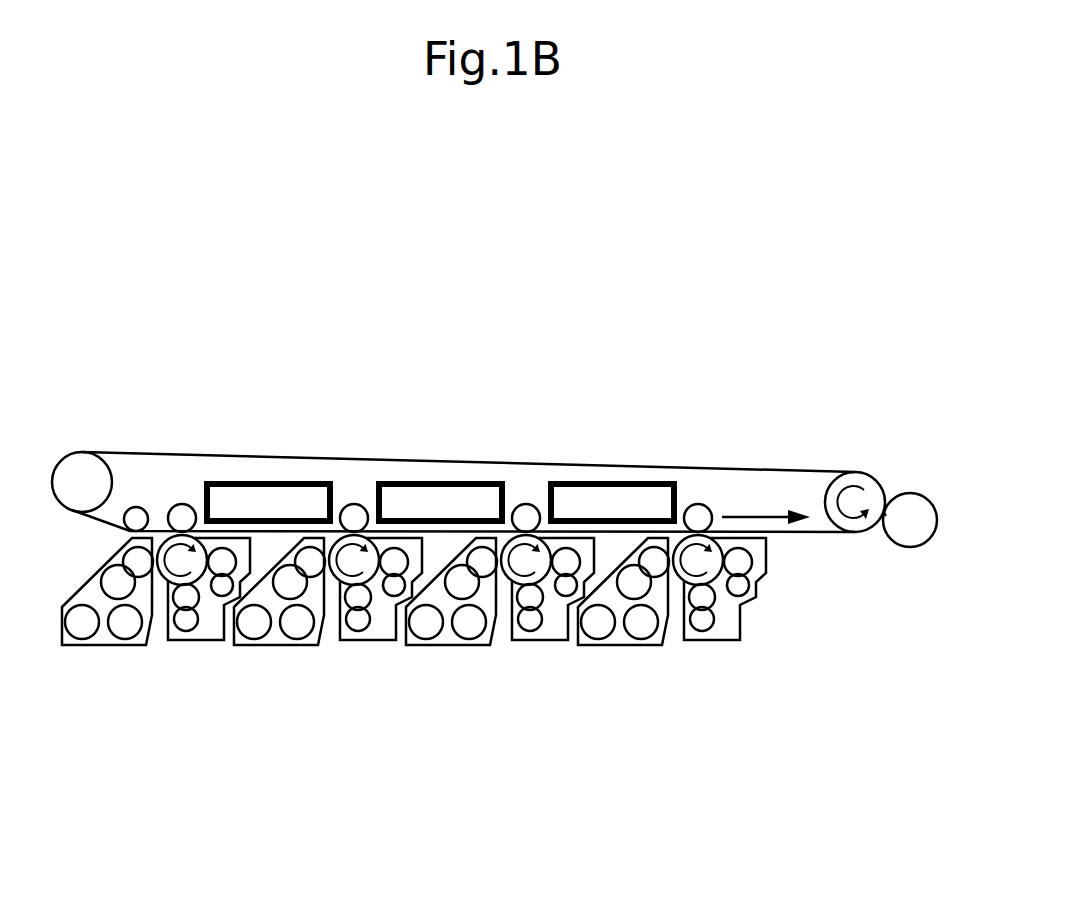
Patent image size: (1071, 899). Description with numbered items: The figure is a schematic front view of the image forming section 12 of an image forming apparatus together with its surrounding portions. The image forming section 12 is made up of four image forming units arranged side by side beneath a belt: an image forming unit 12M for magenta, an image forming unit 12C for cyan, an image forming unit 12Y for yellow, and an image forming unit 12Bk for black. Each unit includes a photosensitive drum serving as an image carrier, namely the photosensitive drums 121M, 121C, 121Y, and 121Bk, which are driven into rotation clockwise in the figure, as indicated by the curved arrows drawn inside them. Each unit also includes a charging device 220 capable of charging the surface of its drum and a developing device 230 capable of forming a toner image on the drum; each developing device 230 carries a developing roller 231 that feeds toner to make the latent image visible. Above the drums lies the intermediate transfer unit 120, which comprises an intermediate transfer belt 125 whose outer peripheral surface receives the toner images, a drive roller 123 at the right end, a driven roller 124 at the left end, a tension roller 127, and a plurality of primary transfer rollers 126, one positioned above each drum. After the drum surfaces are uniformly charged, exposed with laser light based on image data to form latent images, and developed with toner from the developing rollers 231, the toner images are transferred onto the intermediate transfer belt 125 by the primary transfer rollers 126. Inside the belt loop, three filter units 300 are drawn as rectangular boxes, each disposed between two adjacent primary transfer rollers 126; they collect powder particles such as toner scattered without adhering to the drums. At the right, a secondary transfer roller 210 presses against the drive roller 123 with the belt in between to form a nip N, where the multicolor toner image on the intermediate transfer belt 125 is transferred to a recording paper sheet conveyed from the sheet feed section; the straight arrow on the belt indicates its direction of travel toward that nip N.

The image forming section 12 is at (700, 330).
The intermediate transfer unit 120 is at (499, 412).
The intermediate transfer belt 125 is at (302, 458).
The driven roller 124 is at (77, 477).
The drive roller 123 is at (860, 497).
The tension roller 127 is at (130, 518).
The primary transfer rollers 126 is at (187, 515).
The filter units 300 is at (250, 482).
The image forming unit for magenta 12M is at (138, 728).
The image forming unit for cyan 12C is at (309, 728).
The image forming unit for yellow 12Y is at (481, 728).
The image forming unit for black 12Bk is at (606, 794).
The photosensitive drum for magenta 121M is at (190, 572).
The photosensitive drum for cyan 121C is at (362, 572).
The photosensitive drum for yellow 121Y is at (534, 572).
The photosensitive drum for black 121Bk is at (706, 577).
The developing device 230 is at (625, 645).
The charging device 220 is at (693, 643).
The developing roller 231 is at (658, 570).
The secondary transfer roller 210 is at (903, 537).
The nip N is at (890, 512).